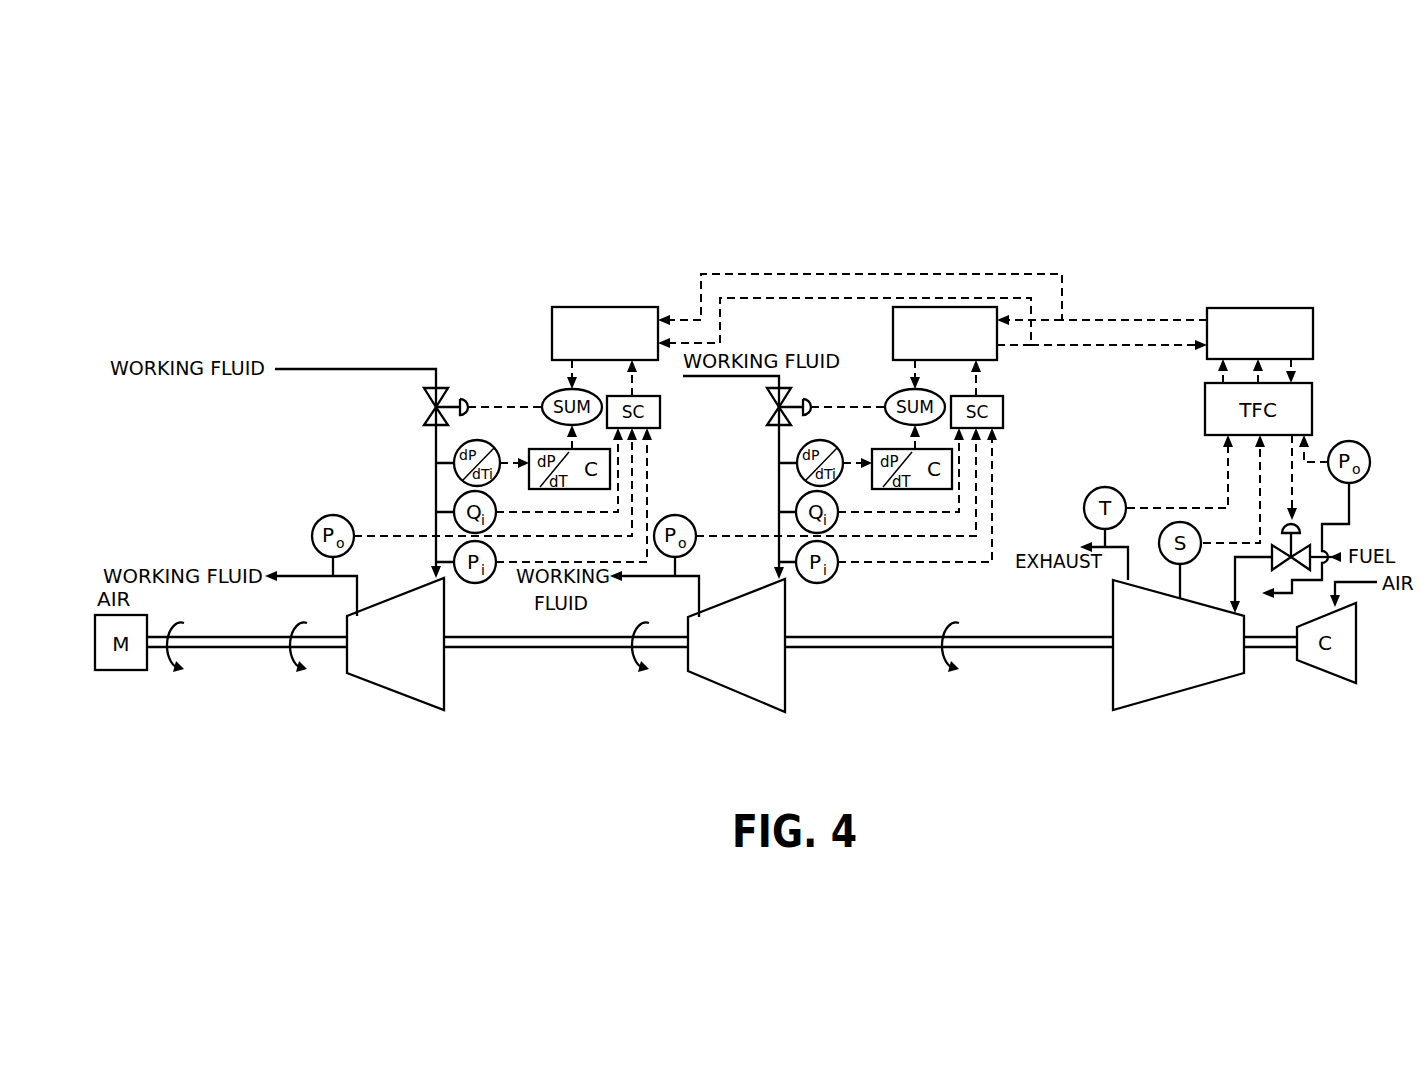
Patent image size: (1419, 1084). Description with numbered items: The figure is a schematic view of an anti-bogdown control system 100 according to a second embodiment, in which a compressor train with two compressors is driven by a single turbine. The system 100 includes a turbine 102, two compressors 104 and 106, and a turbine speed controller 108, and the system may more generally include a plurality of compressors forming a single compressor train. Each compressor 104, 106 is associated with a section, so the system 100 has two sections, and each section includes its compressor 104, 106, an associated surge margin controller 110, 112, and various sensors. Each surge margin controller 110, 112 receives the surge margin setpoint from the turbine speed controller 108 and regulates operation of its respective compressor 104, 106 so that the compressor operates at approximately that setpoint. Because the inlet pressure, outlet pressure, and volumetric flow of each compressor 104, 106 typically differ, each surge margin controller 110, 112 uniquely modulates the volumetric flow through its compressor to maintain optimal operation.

The anti-bogdown control system 100 is at (698, 247).
The turbine 102 is at (1185, 685).
The compressor 104 is at (727, 679).
The compressor 106 is at (380, 683).
The turbine speed controller 108 is at (1238, 308).
The surge margin controller 110 is at (893, 330).
The surge margin controller 112 is at (572, 307).